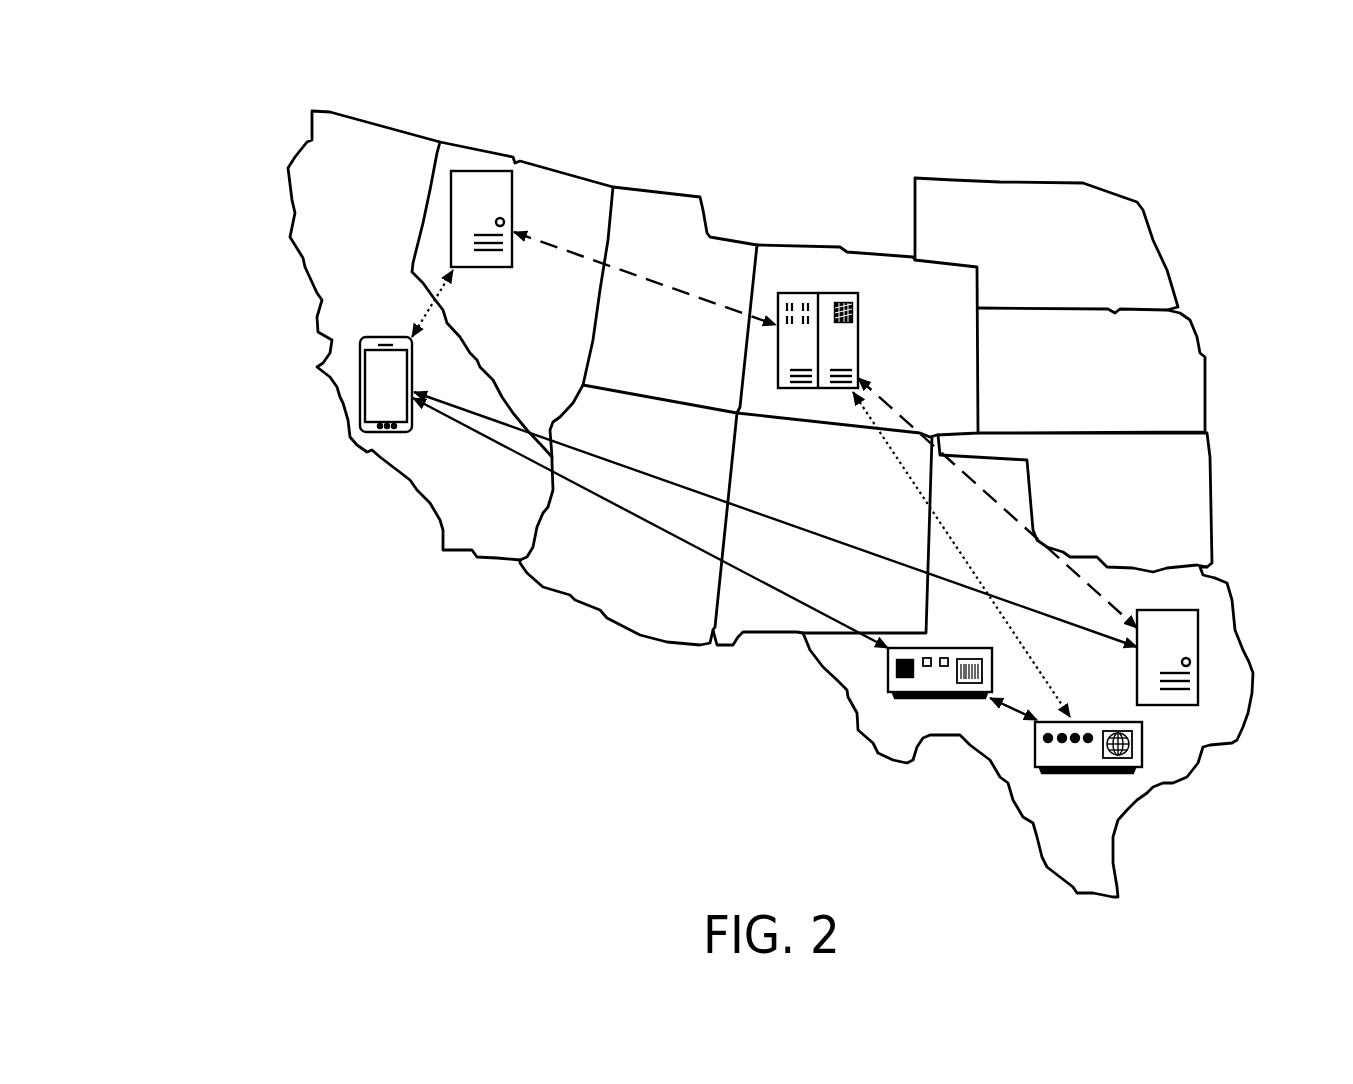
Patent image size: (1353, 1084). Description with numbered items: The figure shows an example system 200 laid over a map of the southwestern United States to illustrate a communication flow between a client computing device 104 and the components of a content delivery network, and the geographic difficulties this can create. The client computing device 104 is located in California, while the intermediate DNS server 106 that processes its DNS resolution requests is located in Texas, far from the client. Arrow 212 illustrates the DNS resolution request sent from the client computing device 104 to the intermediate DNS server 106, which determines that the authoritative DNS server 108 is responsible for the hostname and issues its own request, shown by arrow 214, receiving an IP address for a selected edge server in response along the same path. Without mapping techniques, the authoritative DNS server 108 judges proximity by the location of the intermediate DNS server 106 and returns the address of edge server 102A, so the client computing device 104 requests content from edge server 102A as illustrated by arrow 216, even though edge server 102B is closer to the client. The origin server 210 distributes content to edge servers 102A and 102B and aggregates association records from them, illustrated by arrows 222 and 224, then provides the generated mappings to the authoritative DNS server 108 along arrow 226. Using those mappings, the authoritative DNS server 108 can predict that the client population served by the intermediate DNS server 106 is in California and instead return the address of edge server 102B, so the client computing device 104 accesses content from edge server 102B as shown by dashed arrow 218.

The system 200 is at (186, 93).
The edge server 102A is at (1200, 650).
The edge server 102B is at (513, 223).
The client computing device 104 is at (360, 378).
The intermediate DNS server 106 is at (840, 668).
The authoritative DNS server 108 is at (1143, 740).
The origin server 210 is at (860, 335).
The arrow 212 is at (660, 530).
The arrow 214 is at (1015, 717).
The arrow 216 is at (763, 517).
The dashed arrow 218 is at (432, 302).
The arrow 222 is at (672, 288).
The arrow 224 is at (905, 420).
The arrow 226 is at (1047, 685).